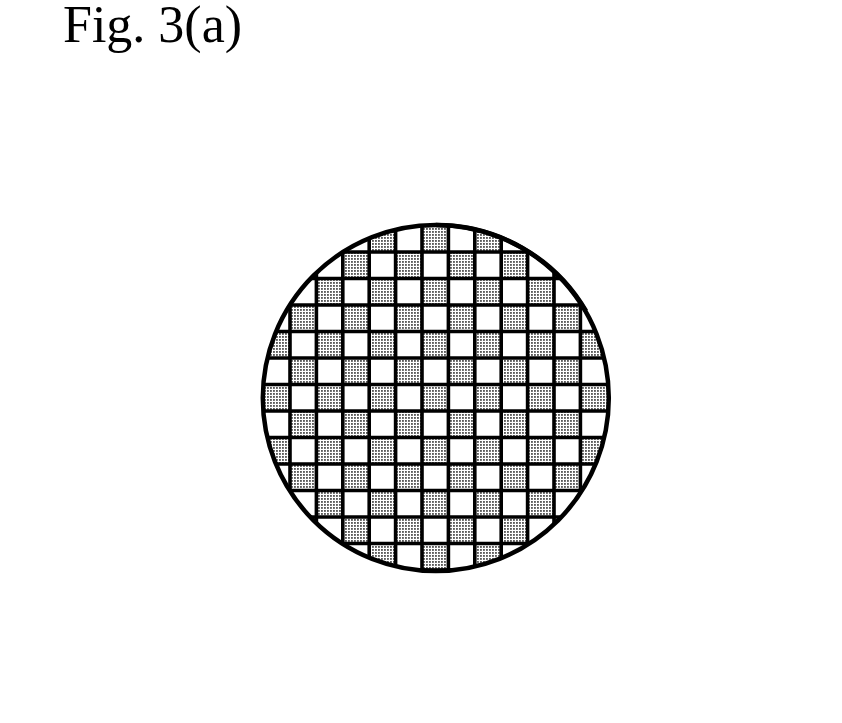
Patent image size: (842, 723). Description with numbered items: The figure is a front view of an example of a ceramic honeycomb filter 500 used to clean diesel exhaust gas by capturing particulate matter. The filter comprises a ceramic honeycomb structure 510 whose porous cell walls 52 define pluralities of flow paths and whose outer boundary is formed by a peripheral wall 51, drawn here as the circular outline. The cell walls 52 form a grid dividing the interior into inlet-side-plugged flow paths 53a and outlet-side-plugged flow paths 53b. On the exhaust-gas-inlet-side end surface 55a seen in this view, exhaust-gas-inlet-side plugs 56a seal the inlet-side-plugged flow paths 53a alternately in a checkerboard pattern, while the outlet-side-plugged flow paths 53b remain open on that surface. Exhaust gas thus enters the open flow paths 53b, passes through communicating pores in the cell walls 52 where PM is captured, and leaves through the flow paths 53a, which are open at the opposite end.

The ceramic honeycomb filter 500 is at (353, 166).
The ceramic honeycomb structure 510 is at (522, 251).
The peripheral wall 51 is at (332, 537).
The porous cell walls 52 is at (386, 518).
The inlet-side-plugged flow paths 53a is at (463, 527).
The outlet-side-plugged flow paths 53b is at (490, 527).
The exhaust-gas-inlet-side end surface 55a is at (557, 500).
The exhaust-gas-inlet-side plugs 56a is at (572, 425).